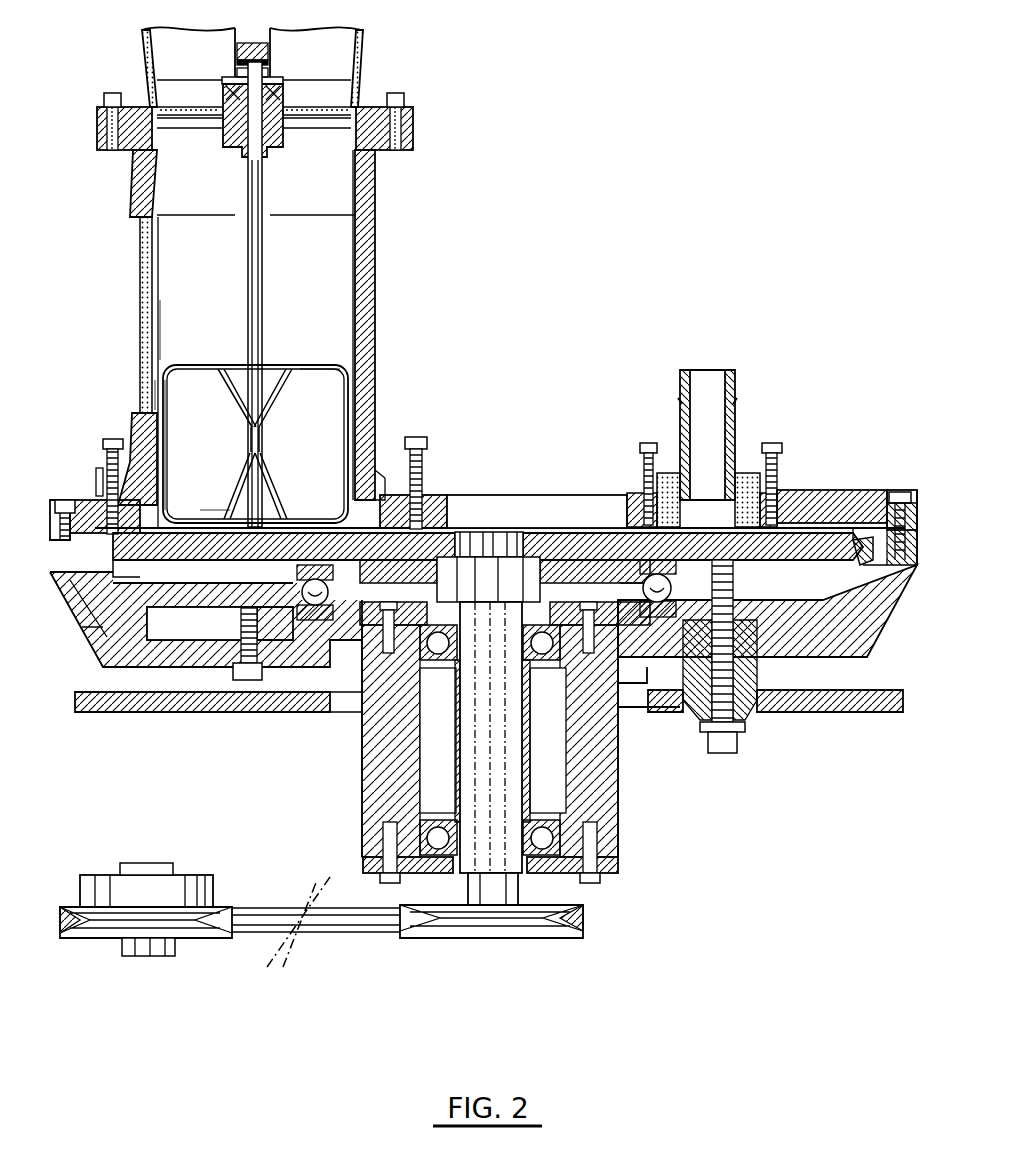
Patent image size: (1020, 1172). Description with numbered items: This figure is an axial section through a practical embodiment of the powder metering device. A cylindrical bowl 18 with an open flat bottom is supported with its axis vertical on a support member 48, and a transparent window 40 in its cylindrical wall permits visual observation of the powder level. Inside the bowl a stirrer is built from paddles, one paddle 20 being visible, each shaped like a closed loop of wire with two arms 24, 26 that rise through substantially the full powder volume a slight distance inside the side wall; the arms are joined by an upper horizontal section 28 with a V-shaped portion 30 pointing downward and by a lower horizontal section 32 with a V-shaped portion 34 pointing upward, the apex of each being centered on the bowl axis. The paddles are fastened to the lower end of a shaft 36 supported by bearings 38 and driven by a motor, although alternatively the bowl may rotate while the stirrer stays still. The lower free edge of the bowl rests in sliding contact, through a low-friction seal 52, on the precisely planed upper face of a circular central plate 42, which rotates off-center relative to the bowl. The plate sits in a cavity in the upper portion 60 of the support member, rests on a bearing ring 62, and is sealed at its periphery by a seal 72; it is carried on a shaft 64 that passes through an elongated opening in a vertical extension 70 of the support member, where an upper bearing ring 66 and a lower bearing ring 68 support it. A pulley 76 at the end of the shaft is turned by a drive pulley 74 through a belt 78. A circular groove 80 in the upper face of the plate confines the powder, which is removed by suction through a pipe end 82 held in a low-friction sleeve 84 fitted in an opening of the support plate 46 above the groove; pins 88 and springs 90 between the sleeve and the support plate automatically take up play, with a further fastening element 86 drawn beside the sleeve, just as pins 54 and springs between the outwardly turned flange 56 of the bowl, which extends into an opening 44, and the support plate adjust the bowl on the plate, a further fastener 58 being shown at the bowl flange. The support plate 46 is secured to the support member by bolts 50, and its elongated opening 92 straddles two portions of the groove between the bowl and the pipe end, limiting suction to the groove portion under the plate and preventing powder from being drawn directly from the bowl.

The bowl 18 is at (122, 193).
The paddle 20 is at (167, 362).
The arm 24 is at (163, 388).
The arm 26 is at (292, 418).
The horizontal section 28 is at (322, 366).
The V-shaped portion 30 is at (300, 395).
The horizontal section 32 is at (200, 527).
The V-shaped portion 34 is at (272, 470).
The shaft 36 is at (262, 245).
The bearings 38 is at (293, 77).
The window 40 is at (142, 260).
The central plate 42 is at (608, 531).
The opening 44 is at (165, 480).
The support plate 46 is at (850, 507).
The support member 48 is at (120, 632).
The bolts 50 is at (62, 500).
The seal 52 is at (382, 522).
The pins 54 is at (113, 439).
The flange 56 is at (98, 470).
The bolt 58 is at (420, 453).
The upper portion 60 is at (152, 690).
The bearing ring 62 is at (318, 604).
The shaft 64 is at (507, 795).
The upper bearing ring 66 is at (425, 648).
The lower bearing ring 68 is at (428, 857).
The vertical extension 70 is at (383, 790).
The seal 72 is at (92, 622).
The drive pulley 74 is at (200, 935).
The pulley 76 is at (460, 933).
The belt 78 is at (337, 933).
The groove 80 is at (253, 537).
The pipe end 82 is at (732, 387).
The sleeve 84 is at (747, 477).
The block 86 is at (672, 477).
The pins 88 is at (784, 460).
The springs 90 is at (780, 468).
The opening 92 is at (540, 507).